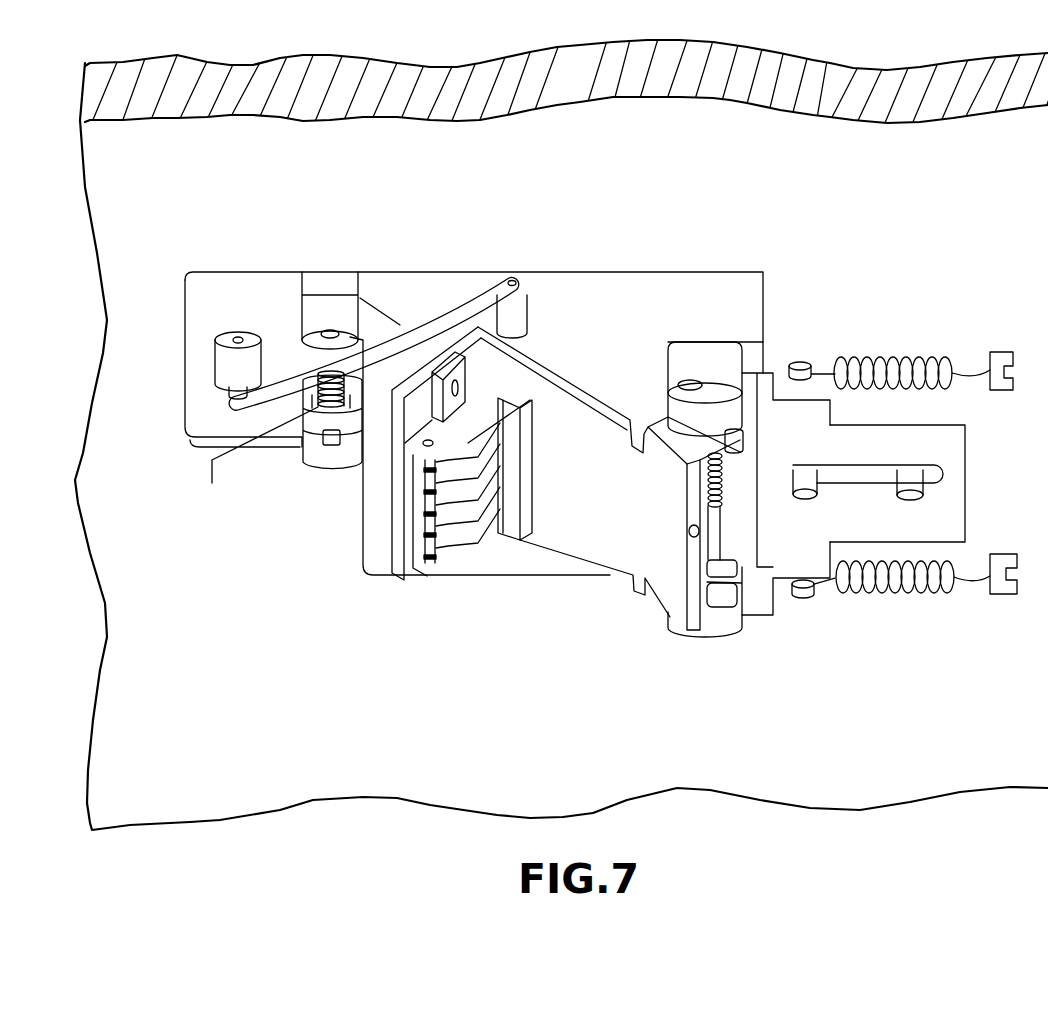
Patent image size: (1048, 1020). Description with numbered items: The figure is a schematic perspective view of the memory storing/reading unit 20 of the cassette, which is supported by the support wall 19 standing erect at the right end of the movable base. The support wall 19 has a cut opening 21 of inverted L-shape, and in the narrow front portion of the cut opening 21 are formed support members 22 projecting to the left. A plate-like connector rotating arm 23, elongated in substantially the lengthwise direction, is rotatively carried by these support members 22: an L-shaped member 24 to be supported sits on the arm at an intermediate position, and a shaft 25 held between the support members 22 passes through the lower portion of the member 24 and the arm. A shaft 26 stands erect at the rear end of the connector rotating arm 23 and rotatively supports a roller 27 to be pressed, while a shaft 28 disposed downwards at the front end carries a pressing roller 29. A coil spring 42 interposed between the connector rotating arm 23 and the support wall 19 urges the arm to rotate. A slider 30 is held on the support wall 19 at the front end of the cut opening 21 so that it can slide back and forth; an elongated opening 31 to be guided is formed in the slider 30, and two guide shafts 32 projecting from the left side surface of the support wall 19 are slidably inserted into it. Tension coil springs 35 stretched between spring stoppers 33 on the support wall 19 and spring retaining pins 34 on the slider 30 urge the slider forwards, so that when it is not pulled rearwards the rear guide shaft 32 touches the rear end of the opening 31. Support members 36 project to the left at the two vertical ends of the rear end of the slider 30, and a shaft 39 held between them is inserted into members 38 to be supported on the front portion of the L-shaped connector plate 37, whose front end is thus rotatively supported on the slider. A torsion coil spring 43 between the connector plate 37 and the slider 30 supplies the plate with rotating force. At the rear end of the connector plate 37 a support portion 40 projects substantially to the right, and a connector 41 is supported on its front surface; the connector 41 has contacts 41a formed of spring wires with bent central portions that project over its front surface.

The support wall 19 is at (466, 135).
The memory storing/reading unit 20 is at (692, 311).
The cut opening 21 is at (655, 277).
The support members 22 is at (335, 296).
The connector rotating arm 23 is at (404, 317).
The member to be supported 24 is at (355, 447).
The shaft 25 is at (330, 440).
The shaft 26 is at (239, 338).
The roller to be pressed 27 is at (312, 373).
The shaft 28 is at (513, 281).
The pressing roller 29 is at (520, 322).
The slider 30 is at (960, 460).
The opening to be guided 31 is at (872, 483).
The guide shafts 32 is at (915, 497).
The spring stoppers 33 is at (1000, 352).
The spring retaining pins 34 is at (803, 362).
The tension coil springs 35 is at (888, 358).
The support members 36 is at (737, 405).
The connector plate 37 is at (618, 578).
The members to be supported 38 is at (748, 452).
The shaft 39 is at (718, 532).
The support portion 40 is at (397, 510).
The connector 41 is at (507, 392).
The contacts 41a is at (472, 453).
The coil spring 42 is at (322, 410).
The torsion coil spring 43 is at (708, 480).